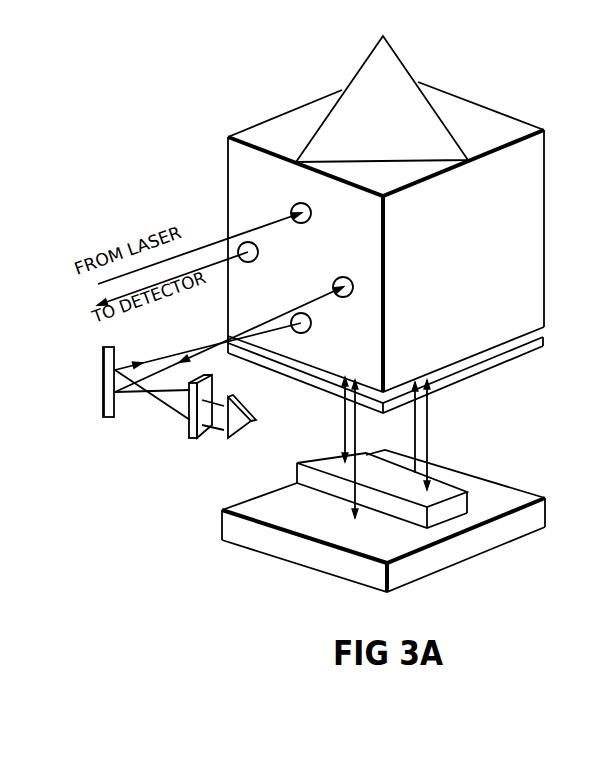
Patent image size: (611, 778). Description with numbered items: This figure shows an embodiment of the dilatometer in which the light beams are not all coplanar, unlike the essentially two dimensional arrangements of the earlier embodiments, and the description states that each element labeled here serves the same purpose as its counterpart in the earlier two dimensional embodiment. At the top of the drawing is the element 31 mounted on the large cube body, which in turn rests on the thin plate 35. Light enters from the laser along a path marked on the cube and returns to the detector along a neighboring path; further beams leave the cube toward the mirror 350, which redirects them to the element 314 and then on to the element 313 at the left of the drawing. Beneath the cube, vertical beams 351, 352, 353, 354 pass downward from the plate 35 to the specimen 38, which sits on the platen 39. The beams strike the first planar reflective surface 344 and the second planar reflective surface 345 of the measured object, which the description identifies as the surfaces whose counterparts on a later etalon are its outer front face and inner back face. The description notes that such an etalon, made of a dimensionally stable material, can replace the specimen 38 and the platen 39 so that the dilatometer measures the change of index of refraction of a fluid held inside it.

The corner reflector 31 is at (400, 92).
The mounting plate 35 is at (543, 340).
The specimen 38 is at (470, 500).
The platen 39 is at (541, 517).
The prism 313 is at (250, 428).
The beam splitter 314 is at (205, 436).
The first planar reflective surface 344 is at (388, 482).
The second planar reflective surface 345 is at (240, 508).
The mirror 350 is at (103, 410).
The light beam 351 is at (345, 428).
The light beam 352 is at (350, 516).
The light beam 353 is at (415, 407).
The light beam 354 is at (428, 420).